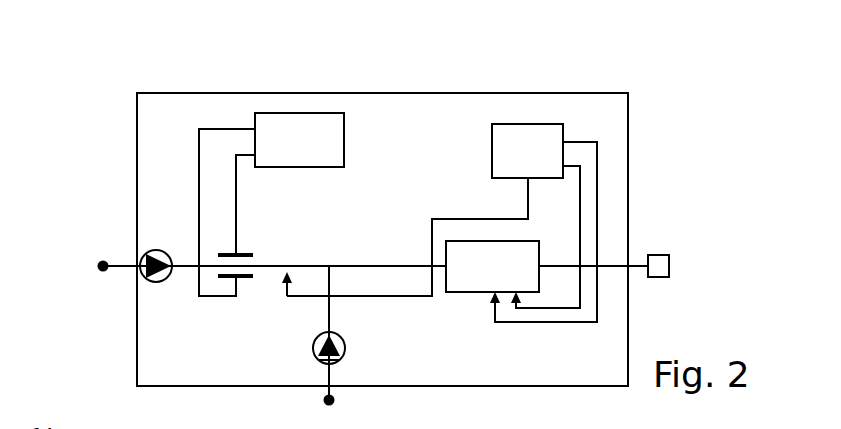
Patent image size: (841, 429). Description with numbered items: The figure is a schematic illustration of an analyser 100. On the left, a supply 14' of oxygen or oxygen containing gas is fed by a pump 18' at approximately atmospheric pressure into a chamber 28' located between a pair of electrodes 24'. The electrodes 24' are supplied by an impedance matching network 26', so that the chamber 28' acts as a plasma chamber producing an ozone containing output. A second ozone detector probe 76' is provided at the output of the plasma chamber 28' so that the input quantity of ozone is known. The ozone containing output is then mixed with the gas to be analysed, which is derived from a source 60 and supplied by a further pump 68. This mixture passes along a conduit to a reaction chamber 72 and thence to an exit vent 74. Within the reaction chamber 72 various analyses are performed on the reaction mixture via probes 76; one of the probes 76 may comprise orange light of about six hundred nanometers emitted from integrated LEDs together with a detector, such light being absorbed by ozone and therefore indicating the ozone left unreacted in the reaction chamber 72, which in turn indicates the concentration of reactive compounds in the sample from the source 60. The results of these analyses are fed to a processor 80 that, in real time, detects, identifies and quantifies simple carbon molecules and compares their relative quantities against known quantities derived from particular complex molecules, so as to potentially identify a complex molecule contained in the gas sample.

The analyser 100 is at (529, 68).
The supply of oxygen or oxygen containing gas 14' is at (72, 237).
The pump 18' is at (156, 308).
The electrodes 24' is at (248, 228).
The impedance matching network 26' is at (299, 140).
The chamber 28' is at (268, 245).
The second ozone detector probe 76' is at (257, 299).
The pump 68 is at (345, 348).
The source 60 is at (335, 400).
The reaction chamber 72 is at (492, 266).
The processor 80 is at (527, 151).
The probes 76 is at (483, 329).
The exit vent 74 is at (668, 255).